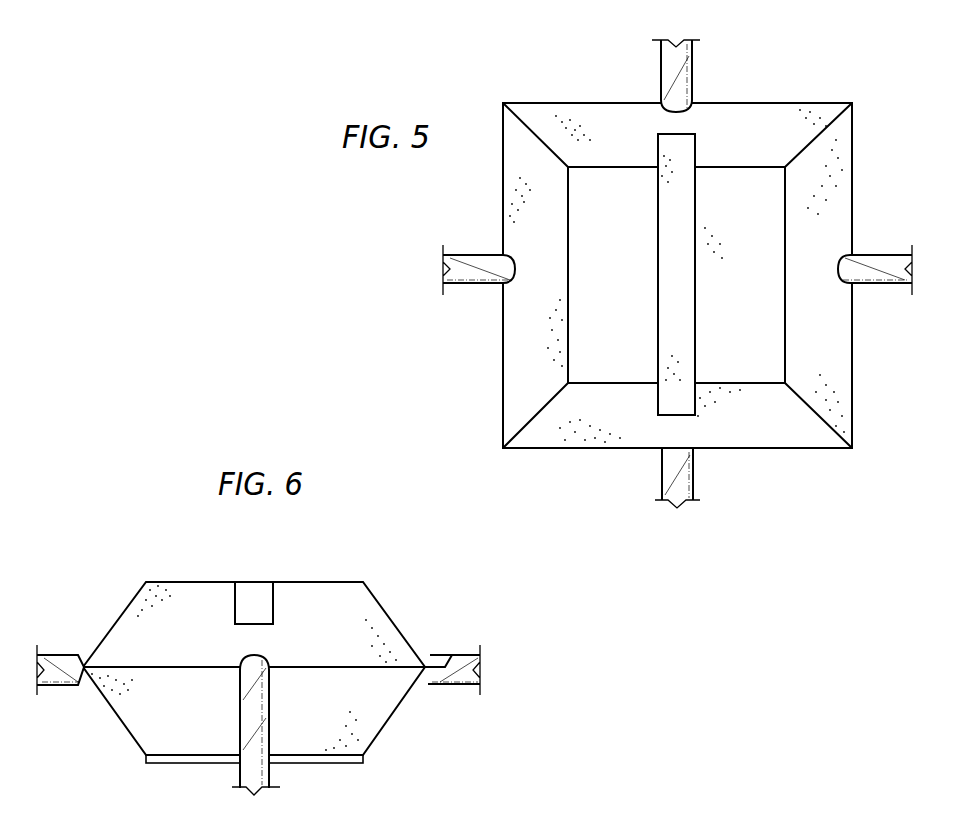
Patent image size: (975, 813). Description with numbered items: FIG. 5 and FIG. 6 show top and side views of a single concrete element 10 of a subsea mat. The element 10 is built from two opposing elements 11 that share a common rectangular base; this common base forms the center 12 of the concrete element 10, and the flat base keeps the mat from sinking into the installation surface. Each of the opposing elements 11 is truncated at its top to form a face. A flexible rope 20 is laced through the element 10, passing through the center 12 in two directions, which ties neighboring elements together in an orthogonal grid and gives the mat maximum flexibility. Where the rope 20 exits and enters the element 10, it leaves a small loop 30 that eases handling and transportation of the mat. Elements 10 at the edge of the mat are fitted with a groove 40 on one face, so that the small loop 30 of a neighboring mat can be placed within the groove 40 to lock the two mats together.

In FIG. 5, the concrete element 10 is at (799, 74).
In FIG. 6, the concrete element 10 is at (115, 568).
In FIG. 6, the opposing element 11 is at (383, 607).
In FIG. 6, the center 12 is at (441, 662).
In FIG. 5, the flexible rope 20 is at (471, 255).
In FIG. 6, the flexible rope 20 is at (70, 655).
In FIG. 5, the small loop 30 is at (661, 63).
In FIG. 6, the small loop 30 is at (270, 772).
In FIG. 5, the groove 40 is at (658, 316).
In FIG. 6, the groove 40 is at (273, 594).